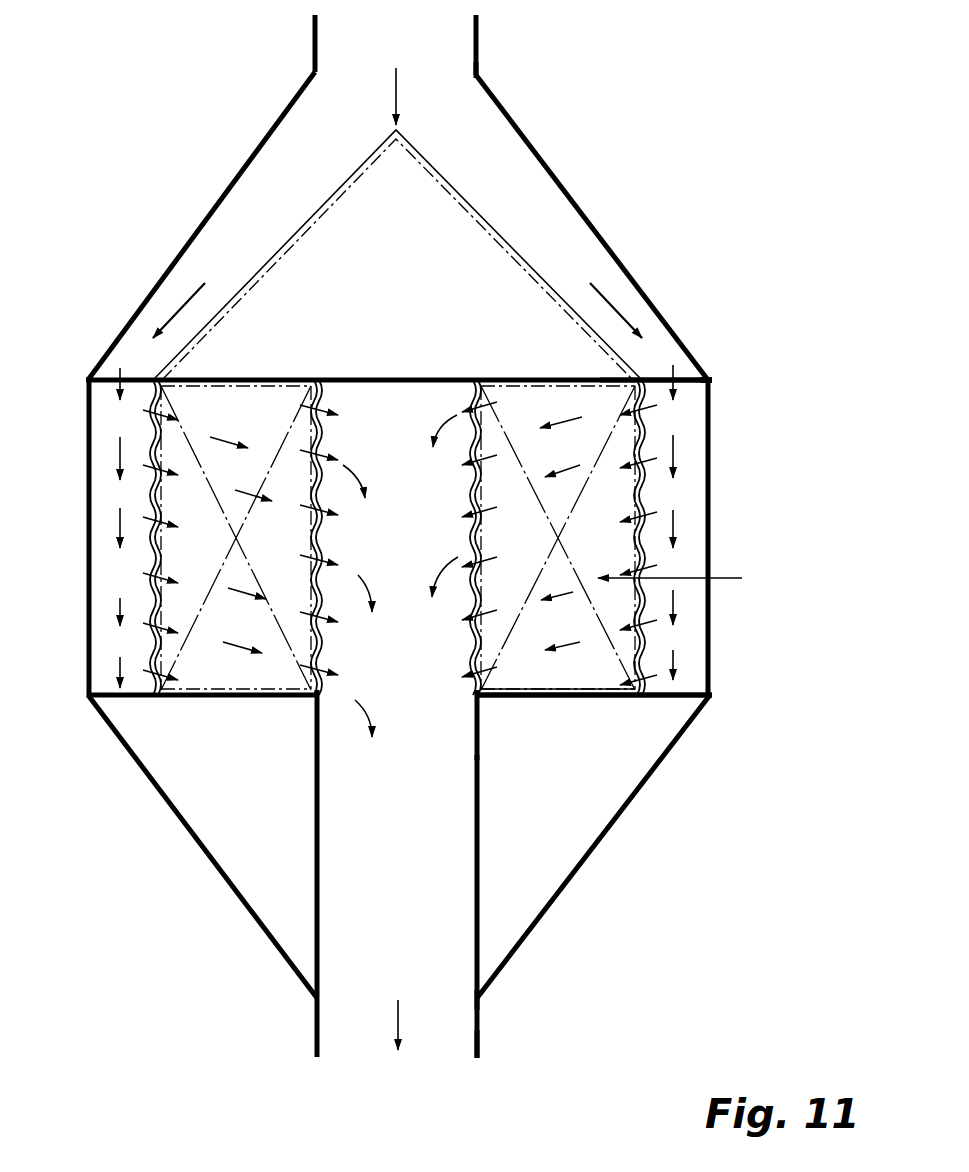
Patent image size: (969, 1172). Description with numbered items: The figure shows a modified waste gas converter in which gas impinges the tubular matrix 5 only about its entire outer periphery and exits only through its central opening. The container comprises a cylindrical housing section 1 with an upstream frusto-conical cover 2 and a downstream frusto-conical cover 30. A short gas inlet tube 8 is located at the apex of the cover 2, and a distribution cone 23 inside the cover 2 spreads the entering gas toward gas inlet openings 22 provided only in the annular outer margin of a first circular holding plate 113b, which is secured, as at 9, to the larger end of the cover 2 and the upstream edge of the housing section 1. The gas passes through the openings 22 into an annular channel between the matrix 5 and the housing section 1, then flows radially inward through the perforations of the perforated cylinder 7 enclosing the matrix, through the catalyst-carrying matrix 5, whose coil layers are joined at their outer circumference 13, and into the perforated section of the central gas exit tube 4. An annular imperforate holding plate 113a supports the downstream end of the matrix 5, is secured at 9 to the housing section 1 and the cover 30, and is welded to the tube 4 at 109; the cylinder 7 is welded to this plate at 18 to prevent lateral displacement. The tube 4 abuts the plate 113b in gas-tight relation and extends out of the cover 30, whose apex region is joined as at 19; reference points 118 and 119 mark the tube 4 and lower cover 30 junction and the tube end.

The cylindrical housing section 1 is at (712, 475).
The frusto-conical cover 2 is at (543, 163).
The gas exit tube 4 is at (478, 952).
The tubular matrix 5 is at (682, 579).
The perforated cylinder 7 is at (643, 540).
The gas inlet tube 8 is at (477, 22).
The securing joint 9 is at (712, 383).
The outer circumference 13 is at (645, 435).
The weld 18 is at (645, 688).
The securing joint 19 is at (477, 73).
The gas inlet openings 22 is at (688, 373).
The distribution cone 23 is at (497, 230).
The frusto-conical cover 30 is at (550, 903).
The weld 109 is at (480, 700).
The annular imperforate holding plate 113a is at (595, 700).
The first circular holding plate 113b is at (547, 378).
The outlet tube end 118 is at (478, 1042).
The outlet tube junction 119 is at (478, 1000).